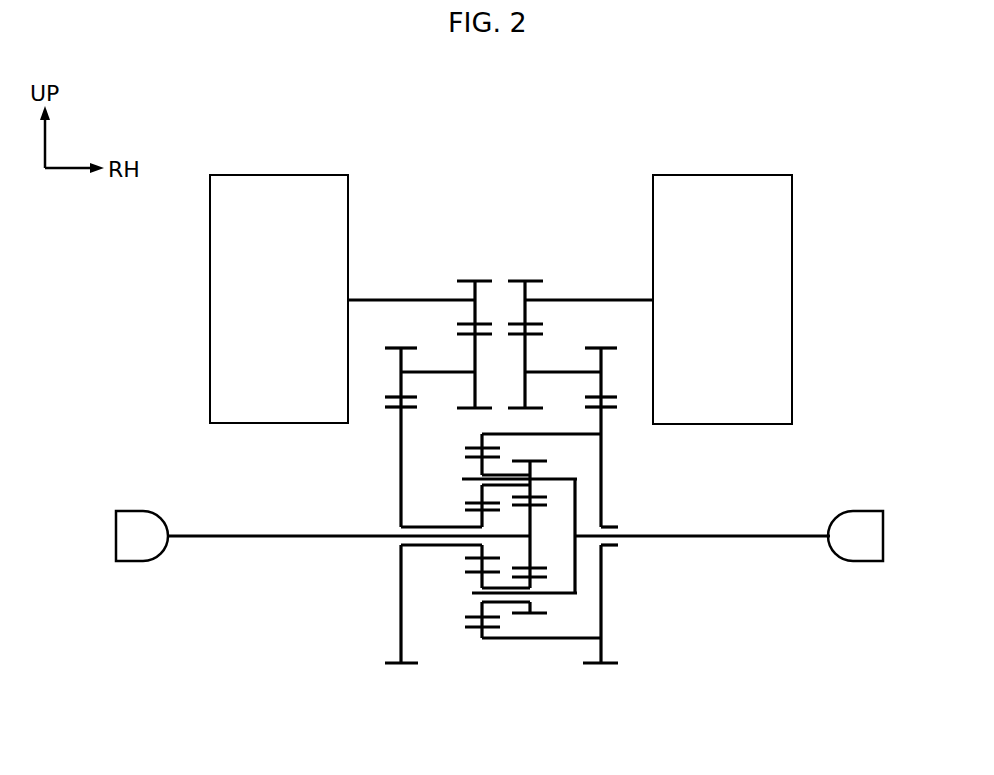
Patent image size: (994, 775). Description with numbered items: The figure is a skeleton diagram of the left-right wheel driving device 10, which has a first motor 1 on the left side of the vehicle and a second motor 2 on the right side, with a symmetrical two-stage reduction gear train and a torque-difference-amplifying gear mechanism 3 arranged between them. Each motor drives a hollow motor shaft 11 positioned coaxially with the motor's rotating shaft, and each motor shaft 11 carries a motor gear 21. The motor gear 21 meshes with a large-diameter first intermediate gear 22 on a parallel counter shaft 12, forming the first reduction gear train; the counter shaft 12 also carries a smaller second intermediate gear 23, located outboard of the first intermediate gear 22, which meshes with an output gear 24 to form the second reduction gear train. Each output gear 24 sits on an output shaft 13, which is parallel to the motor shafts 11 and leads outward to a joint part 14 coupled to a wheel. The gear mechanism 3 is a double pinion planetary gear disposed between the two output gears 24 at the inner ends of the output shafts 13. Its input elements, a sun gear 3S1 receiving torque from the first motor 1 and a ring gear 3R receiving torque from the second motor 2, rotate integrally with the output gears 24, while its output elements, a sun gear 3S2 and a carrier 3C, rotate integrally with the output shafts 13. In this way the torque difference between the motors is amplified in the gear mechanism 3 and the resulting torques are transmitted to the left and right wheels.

The driving device 10 is at (846, 190).
The first motor 1 is at (200, 255).
The second motor 2 is at (803, 254).
The motor shaft 11 is at (375, 300).
The counter shaft 12 is at (425, 372).
The motor gear 21 is at (470, 280).
The first intermediate gear 22 is at (472, 392).
The second intermediate gear 23 is at (393, 348).
The gear mechanism 3 is at (540, 585).
The ring gear 3R is at (482, 444).
The carrier 3C is at (557, 595).
The sun gear 3S1 is at (482, 552).
The sun gear 3S2 is at (530, 562).
The output gear 24 is at (398, 650).
The output shaft 13 is at (235, 538).
The joint part 14 is at (132, 562).